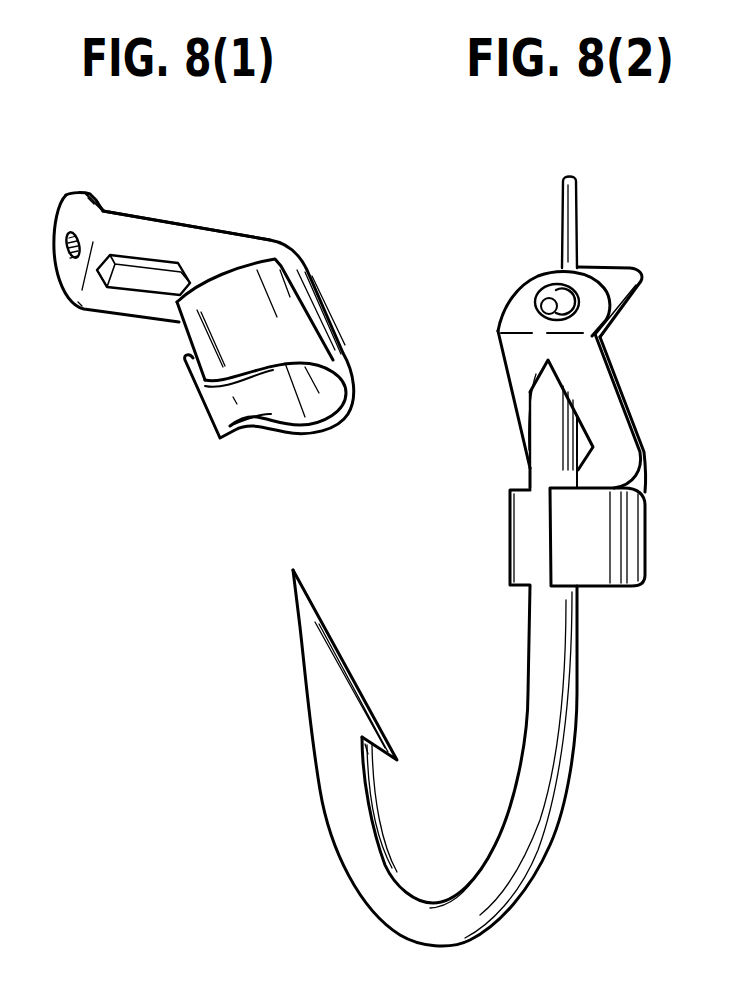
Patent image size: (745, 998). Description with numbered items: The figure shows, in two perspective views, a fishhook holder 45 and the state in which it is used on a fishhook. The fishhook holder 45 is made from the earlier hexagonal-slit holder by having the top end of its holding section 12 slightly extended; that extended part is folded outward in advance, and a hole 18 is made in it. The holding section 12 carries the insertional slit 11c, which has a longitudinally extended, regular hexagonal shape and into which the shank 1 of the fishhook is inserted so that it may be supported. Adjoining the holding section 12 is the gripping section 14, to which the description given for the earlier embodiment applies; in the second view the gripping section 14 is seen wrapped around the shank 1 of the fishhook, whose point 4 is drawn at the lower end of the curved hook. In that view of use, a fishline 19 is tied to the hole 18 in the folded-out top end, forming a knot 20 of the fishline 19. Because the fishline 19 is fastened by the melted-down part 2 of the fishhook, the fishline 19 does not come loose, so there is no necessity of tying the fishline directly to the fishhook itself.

In FIG. 82, the shank 1 is at (537, 733).
In FIG. 82, the melted-down part 2 is at (623, 273).
In FIG. 82, the point 4 is at (340, 680).
In FIG. 81, the insertional slit 11c is at (140, 268).
In FIG. 81, the holding section 12 is at (218, 233).
In FIG. 82, the holding section 12 is at (597, 380).
In FIG. 81, the gripping section 14 is at (307, 303).
In FIG. 82, the gripping section 14 is at (620, 542).
In FIG. 81, the hole 18 is at (68, 254).
In FIG. 82, the fishline 19 is at (573, 201).
In FIG. 82, the knot 20 is at (547, 293).
In FIG. 81, the fishhook holder 45 is at (296, 248).
In FIG. 82, the fishhook holder 45 is at (497, 355).